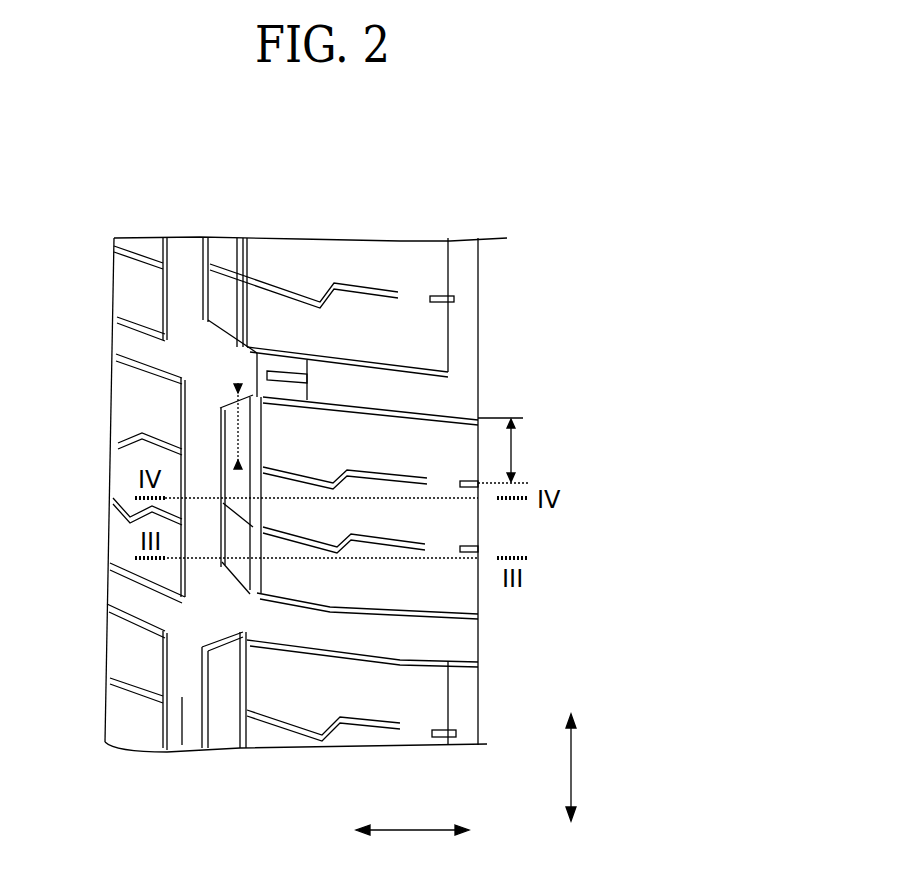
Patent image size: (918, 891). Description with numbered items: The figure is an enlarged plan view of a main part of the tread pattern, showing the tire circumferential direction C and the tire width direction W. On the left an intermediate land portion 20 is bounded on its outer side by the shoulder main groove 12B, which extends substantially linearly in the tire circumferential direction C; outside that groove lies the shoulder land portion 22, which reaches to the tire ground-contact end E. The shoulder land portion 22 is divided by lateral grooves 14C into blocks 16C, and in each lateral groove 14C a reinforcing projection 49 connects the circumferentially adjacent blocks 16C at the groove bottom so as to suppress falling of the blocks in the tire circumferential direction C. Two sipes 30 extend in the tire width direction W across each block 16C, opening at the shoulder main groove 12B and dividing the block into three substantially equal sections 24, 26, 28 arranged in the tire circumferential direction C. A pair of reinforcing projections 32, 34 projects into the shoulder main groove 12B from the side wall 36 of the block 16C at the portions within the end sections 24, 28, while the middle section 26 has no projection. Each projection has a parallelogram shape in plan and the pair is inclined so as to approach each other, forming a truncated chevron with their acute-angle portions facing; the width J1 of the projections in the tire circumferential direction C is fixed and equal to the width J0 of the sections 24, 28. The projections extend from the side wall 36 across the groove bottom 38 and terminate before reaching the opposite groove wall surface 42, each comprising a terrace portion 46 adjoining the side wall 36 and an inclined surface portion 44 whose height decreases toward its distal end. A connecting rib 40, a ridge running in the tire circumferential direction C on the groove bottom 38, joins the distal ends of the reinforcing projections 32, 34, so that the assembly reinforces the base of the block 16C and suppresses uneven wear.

The intermediate land portion 20 is at (132, 210).
The shoulder main groove 12B is at (180, 267).
The shoulder land portion 22 is at (381, 210).
The block 16C is at (413, 253).
The tire ground-contact end E is at (483, 267).
The lateral groove 14C is at (390, 390).
The reinforcing projection 49 is at (280, 377).
The section 24 is at (368, 442).
The sipe 30 is at (410, 470).
The section 26 is at (378, 510).
The section 28 is at (380, 575).
The side wall 36 is at (240, 463).
The reinforcing projection 32 is at (227, 407).
The width of reinforcing projections J1 is at (240, 388).
The connecting rib 40 is at (235, 487).
The inclined surface portion 44 is at (250, 532).
The groove wall surface 42 is at (240, 578).
The reinforcing projection 34 is at (165, 626).
The terrace portion 46 is at (167, 627).
The groove bottom 38 is at (180, 745).
The width of sections J0 is at (510, 450).
The tire circumferential direction C is at (582, 767).
The tire width direction W is at (412, 848).